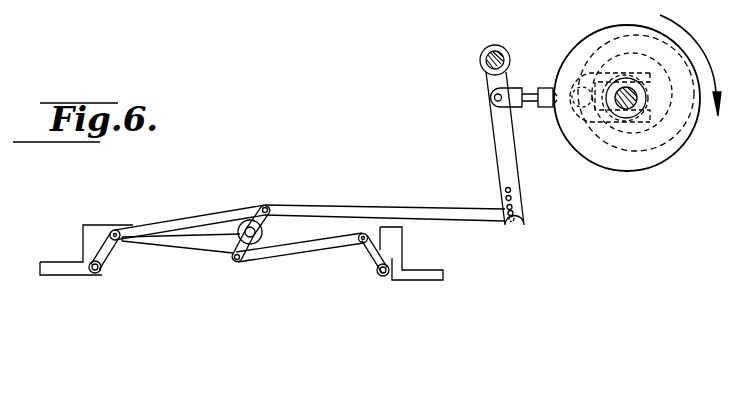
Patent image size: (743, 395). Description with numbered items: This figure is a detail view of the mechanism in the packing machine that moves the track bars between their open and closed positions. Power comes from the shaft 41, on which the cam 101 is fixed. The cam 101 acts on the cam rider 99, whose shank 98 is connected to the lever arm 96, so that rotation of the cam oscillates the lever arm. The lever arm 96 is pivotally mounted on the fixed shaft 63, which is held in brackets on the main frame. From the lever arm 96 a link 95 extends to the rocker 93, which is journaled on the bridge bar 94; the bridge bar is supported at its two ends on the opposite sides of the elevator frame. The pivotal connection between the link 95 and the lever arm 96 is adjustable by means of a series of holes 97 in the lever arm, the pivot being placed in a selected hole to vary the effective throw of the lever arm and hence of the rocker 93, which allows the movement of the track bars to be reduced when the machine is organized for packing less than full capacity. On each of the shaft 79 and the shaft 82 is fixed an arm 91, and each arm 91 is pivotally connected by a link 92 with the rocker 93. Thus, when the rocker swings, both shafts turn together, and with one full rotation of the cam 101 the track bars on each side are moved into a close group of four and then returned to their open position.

The shaft 41 is at (630, 98).
The fixed shaft 63 is at (503, 51).
The shaft 79 is at (99, 273).
The shaft 82 is at (381, 274).
The arm 91 is at (113, 247).
The link 92 is at (216, 218).
The rocker 93 is at (232, 250).
The bridge bar 94 is at (203, 234).
The link 95 is at (395, 198).
The lever arm 96 is at (495, 131).
The holes 97 is at (512, 198).
The shank 98 is at (531, 93).
The cam rider 99 is at (546, 108).
The cam 101 is at (605, 30).